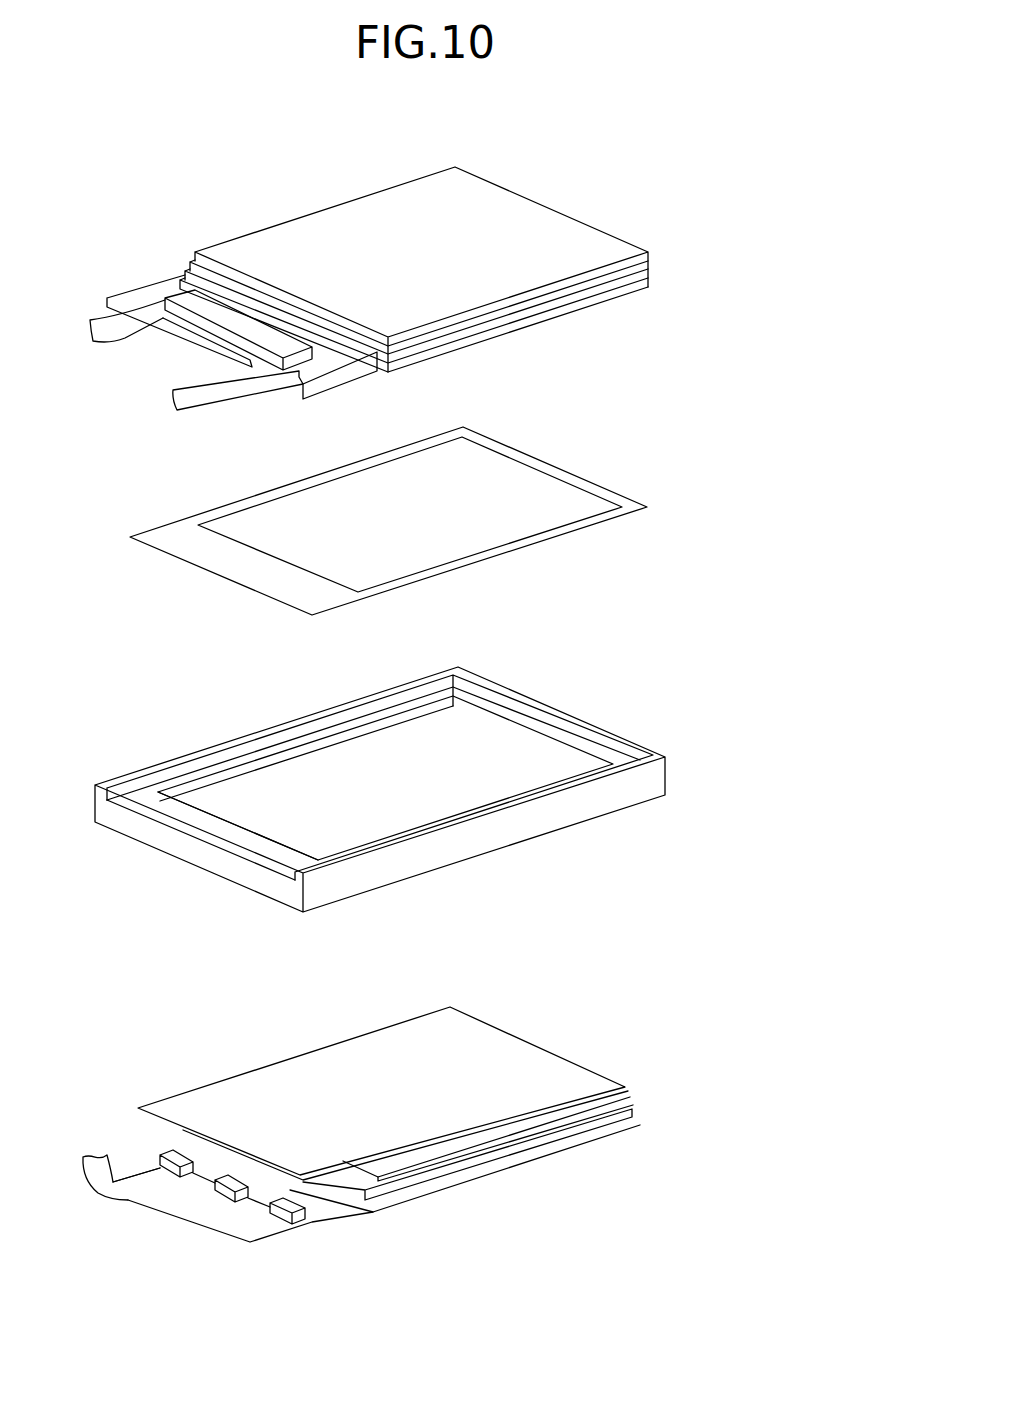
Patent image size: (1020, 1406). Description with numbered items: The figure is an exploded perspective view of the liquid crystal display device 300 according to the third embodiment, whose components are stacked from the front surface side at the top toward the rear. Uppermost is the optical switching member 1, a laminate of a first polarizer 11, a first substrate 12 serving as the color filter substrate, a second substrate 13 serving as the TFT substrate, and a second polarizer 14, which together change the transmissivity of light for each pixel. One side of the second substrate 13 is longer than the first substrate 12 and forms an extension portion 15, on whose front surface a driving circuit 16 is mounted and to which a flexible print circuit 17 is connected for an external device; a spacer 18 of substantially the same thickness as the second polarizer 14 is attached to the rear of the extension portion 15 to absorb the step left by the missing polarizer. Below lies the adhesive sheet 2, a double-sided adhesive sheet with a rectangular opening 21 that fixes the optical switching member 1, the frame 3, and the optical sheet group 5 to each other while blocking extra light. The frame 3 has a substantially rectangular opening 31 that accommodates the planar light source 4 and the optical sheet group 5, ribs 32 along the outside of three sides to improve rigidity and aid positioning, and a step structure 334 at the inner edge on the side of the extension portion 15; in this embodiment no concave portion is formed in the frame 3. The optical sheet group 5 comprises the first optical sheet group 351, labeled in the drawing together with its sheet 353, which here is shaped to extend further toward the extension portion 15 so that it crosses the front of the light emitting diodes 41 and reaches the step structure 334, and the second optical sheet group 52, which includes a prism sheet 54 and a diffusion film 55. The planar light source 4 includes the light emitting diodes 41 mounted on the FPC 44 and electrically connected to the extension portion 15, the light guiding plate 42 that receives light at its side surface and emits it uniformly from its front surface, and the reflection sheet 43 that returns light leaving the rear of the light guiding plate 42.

The liquid crystal display device 300 is at (738, 133).
The optical switching member 1 is at (223, 159).
The first polarizer 11 is at (650, 253).
The first substrate 12 is at (651, 263).
The second substrate 13 is at (653, 272).
The second polarizer 14 is at (654, 282).
The extension portion 15 is at (140, 265).
The driving circuit 16 is at (192, 305).
The flexible print circuit (FPC) 17 is at (205, 393).
The spacer 18 is at (333, 388).
The FPC 44 is at (86, 322).
The adhesive sheet 2 is at (255, 463).
The opening 21 is at (537, 477).
The frame 3 is at (230, 686).
The ribs 32 is at (410, 681).
The opening 31 is at (528, 733).
The step structure 334 is at (288, 817).
The planar light source 4 is at (572, 1220).
The optical sheet group 5 is at (786, 996).
The optical sheet 353 is at (587, 1066).
The first optical sheet group 351 is at (455, 1090).
The second optical sheet group 52 is at (706, 1031).
The prism sheet 54 is at (617, 1083).
The diffusion film 55 is at (625, 1101).
The light guiding plate 42 is at (635, 1112).
The reflection sheet 43 is at (610, 1140).
The light emitting diode (LED) 41 is at (172, 1170).